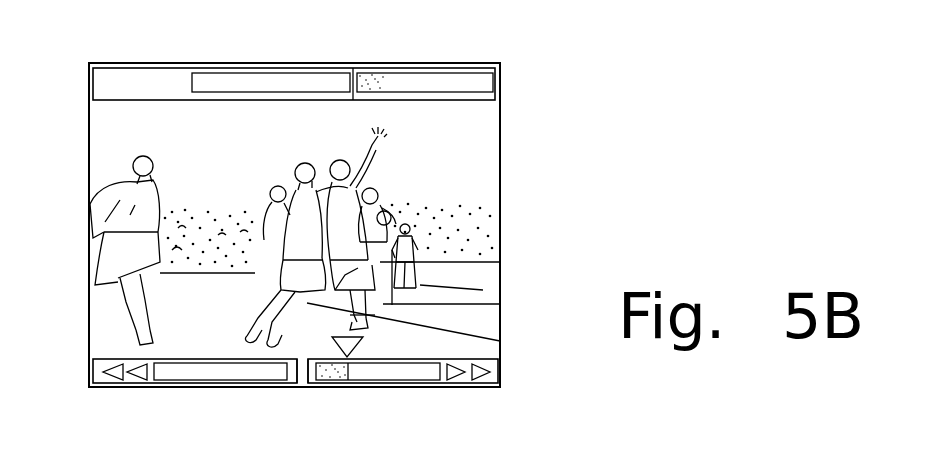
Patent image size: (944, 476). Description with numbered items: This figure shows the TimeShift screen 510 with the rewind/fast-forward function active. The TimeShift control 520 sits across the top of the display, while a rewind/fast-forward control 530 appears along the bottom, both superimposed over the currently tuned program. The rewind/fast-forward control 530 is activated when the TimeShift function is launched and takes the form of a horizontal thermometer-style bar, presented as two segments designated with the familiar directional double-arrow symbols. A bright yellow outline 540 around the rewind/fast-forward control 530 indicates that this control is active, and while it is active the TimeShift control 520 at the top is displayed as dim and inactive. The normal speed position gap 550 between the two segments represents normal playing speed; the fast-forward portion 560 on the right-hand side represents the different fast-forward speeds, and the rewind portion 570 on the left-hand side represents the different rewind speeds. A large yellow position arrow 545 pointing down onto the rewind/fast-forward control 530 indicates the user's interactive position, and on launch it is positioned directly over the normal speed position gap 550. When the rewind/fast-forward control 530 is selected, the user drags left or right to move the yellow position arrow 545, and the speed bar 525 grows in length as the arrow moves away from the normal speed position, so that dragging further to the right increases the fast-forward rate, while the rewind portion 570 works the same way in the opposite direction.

The TimeShift screen 510 is at (490, 150).
The TimeShift control 520 is at (308, 63).
The speed bar 525 is at (332, 370).
The rewind/fast-forward control 530 is at (92, 372).
The bright yellow outline 540 is at (150, 387).
The yellow position arrow 545 is at (350, 350).
The normal speed position gap 550 is at (302, 380).
The fast-forward portion 560 is at (435, 380).
The rewind portion 570 is at (233, 377).